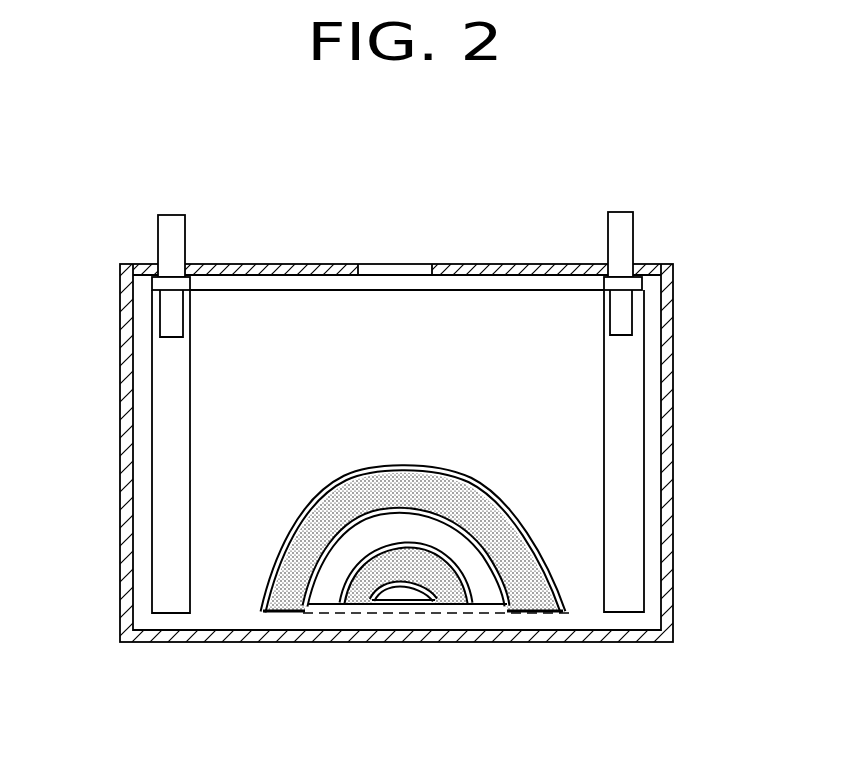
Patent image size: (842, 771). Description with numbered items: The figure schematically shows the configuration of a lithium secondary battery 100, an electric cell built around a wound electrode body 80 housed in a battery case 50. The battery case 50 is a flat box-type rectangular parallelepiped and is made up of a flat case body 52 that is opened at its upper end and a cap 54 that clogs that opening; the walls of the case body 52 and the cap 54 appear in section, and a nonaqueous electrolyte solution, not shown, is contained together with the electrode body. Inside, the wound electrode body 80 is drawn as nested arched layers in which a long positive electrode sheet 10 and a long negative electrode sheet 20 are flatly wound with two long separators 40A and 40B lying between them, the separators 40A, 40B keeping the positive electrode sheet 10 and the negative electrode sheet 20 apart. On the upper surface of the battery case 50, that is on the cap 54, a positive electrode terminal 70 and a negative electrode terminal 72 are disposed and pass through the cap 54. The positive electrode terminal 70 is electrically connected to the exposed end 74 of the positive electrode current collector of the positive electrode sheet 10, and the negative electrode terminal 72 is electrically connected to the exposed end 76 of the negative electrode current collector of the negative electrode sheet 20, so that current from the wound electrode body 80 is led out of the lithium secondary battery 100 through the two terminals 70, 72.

The lithium secondary battery 100 is at (408, 405).
The battery case 50 is at (676, 448).
The case body 52 is at (668, 587).
The cap 54 is at (527, 264).
The positive electrode terminal 70 is at (172, 220).
The negative electrode terminal 72 is at (622, 230).
The exposed end of the positive electrode current collector 74 is at (167, 513).
The exposed end of the negative electrode current collector 76 is at (632, 530).
The positive electrode sheet 10 is at (283, 597).
The negative electrode sheet 20 is at (362, 592).
The separator 40A is at (223, 592).
The separator 40B is at (327, 595).
The wound electrode body 80 is at (582, 614).